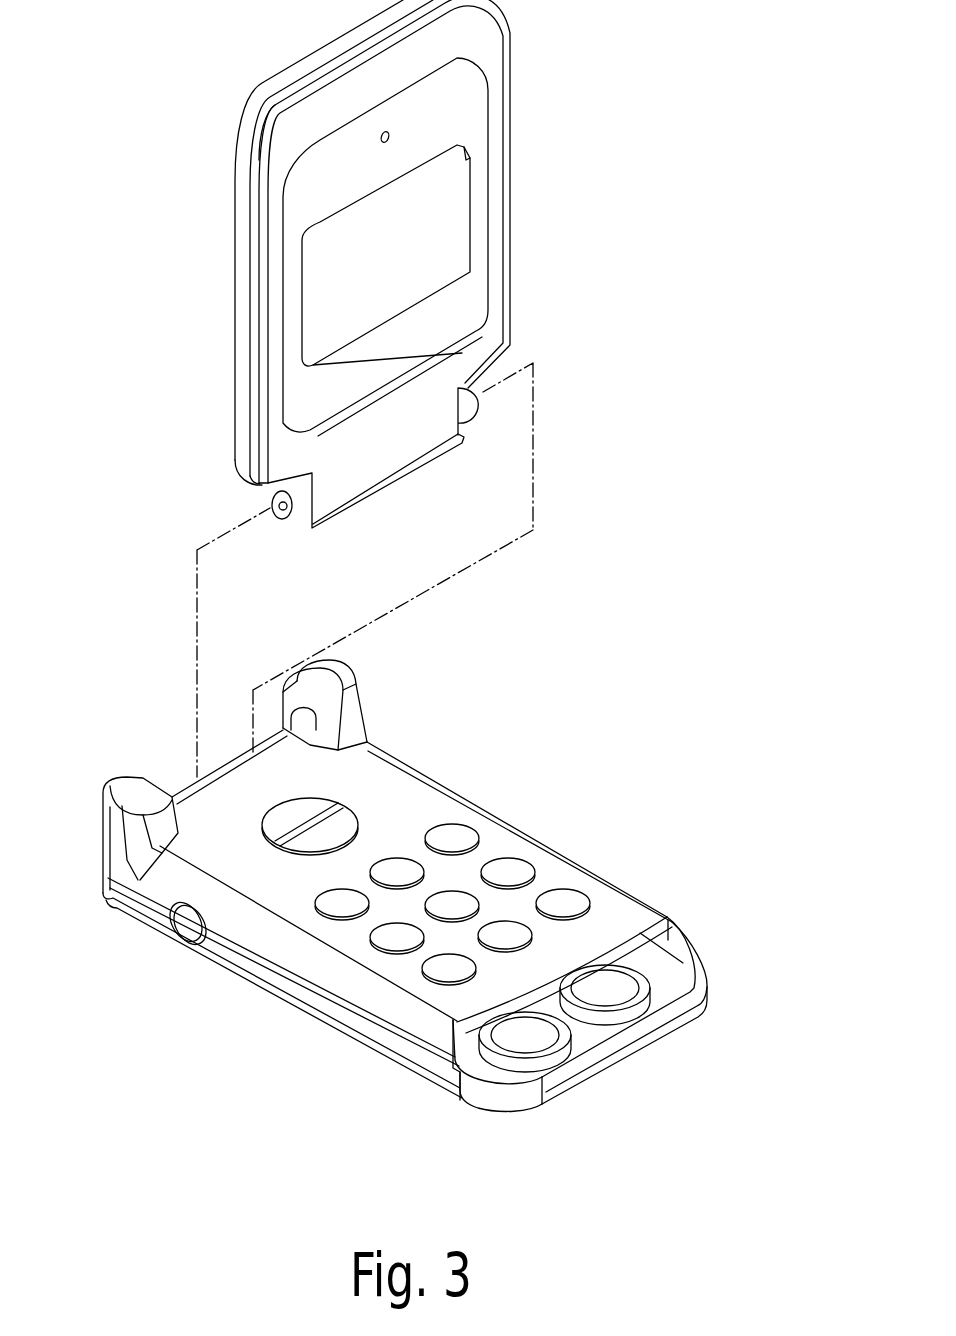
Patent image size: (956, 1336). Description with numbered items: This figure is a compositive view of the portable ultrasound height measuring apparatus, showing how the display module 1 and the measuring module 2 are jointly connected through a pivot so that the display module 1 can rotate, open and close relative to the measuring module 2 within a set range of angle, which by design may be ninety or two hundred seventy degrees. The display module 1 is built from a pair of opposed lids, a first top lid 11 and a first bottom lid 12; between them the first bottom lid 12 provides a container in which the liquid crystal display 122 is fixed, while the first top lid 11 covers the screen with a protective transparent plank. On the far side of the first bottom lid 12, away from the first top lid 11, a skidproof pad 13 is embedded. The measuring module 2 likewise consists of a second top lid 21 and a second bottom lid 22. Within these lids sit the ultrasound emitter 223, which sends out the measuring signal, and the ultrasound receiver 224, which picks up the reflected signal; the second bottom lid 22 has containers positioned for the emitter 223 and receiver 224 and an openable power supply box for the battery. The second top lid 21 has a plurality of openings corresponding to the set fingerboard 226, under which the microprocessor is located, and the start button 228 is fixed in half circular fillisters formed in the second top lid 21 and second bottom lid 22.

The display module 1 is at (382, 264).
The first top lid 11 is at (280, 78).
The first bottom lid 12 is at (493, 123).
The liquid crystal display (LCD) 122 is at (307, 330).
The skidproof pad 13 is at (343, 383).
The measuring module 2 is at (447, 914).
The second top lid 21 is at (466, 849).
The second bottom lid 22 is at (575, 1033).
The ultrasound emitter 223 is at (523, 1033).
The ultrasound receiver 224 is at (615, 987).
The set fingerboard 226 is at (453, 838).
The start button 228 is at (180, 928).